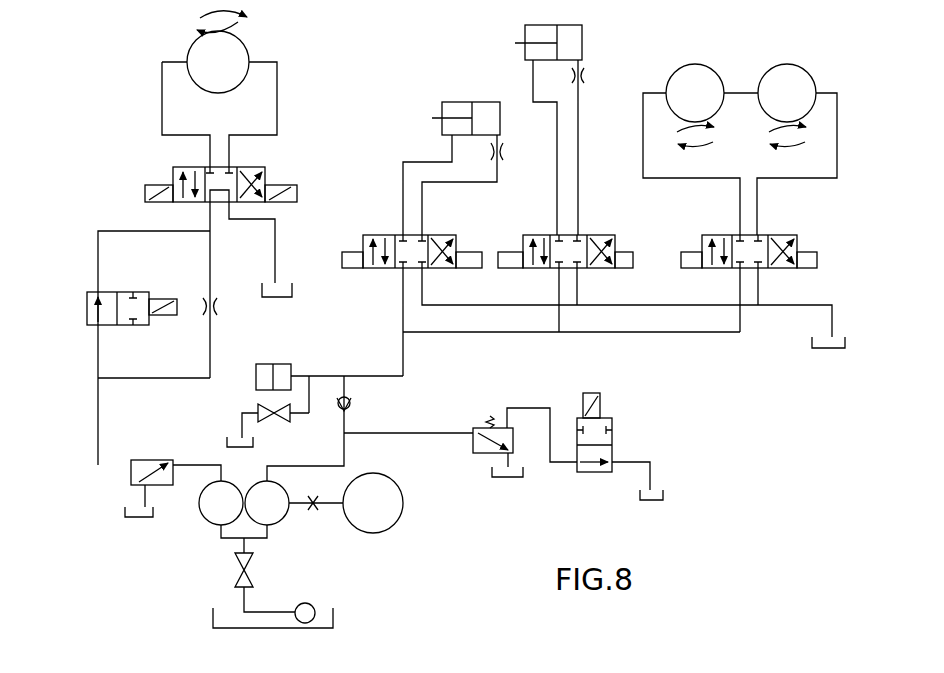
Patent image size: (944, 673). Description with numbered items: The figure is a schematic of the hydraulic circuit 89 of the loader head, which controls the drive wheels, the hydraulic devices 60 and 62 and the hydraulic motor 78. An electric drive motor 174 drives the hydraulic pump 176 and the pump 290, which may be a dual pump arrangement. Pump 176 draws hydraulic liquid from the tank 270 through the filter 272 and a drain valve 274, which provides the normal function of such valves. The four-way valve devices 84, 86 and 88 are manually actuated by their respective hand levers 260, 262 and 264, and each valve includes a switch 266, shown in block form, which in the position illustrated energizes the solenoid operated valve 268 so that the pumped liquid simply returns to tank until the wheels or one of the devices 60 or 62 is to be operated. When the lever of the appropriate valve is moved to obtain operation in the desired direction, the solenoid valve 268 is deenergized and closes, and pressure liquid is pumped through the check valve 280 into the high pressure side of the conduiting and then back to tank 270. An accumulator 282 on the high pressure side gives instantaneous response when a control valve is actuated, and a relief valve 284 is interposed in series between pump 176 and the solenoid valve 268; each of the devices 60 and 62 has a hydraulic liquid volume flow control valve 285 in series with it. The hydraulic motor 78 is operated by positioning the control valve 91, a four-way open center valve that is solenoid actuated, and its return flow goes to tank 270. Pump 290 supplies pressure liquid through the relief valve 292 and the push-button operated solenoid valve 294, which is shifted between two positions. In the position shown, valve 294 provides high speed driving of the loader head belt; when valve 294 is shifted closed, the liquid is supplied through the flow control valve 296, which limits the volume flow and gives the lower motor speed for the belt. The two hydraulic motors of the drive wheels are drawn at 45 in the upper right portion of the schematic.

The hydraulic motor 78 is at (266, 44).
The control valve 91 is at (290, 160).
The device 60 is at (478, 92).
The device 62 is at (592, 38).
The hydraulic liquid volume flow control valve 285 is at (502, 152).
The drive motors 45 is at (724, 61).
The switch 266 is at (346, 251).
The valve device 88 is at (446, 235).
The hand lever 264 is at (499, 252).
The valve device 86 is at (610, 235).
The valve device 84 is at (797, 235).
The hand lever 262 is at (634, 258).
The hand lever 260 is at (818, 256).
The tank 270 is at (293, 290).
The flow control valve 296 is at (217, 306).
The solenoid valve 294 is at (87, 327).
The accumulator 282 is at (290, 364).
The check valve 280 is at (352, 408).
The drain valve 274 is at (279, 425).
The relief valve 292 is at (148, 460).
The pump 290 is at (206, 521).
The hydraulic pump 176 is at (284, 521).
The electric drive motor 174 is at (395, 517).
The filter 272 is at (313, 606).
The relief valve 284 is at (516, 445).
The solenoid operated valve 268 is at (632, 414).
The hydraulic circuit 89 is at (781, 408).